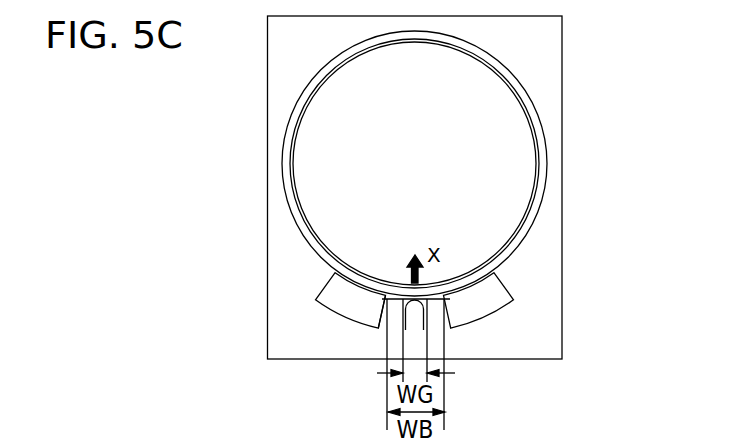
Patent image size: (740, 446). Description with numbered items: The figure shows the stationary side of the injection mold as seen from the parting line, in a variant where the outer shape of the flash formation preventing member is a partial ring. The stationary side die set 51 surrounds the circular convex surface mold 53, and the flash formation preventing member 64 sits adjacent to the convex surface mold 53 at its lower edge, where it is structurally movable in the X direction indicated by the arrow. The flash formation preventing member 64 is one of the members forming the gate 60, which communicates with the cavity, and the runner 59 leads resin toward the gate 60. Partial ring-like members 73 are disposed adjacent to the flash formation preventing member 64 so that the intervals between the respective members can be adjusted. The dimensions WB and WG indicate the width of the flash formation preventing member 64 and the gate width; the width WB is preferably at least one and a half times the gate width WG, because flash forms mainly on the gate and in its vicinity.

The stationary side die set 51 is at (553, 228).
The convex surface mold 53 is at (492, 112).
The runner 59 is at (420, 352).
The gate 60 is at (495, 295).
The flash formation preventing member 64 is at (393, 318).
The partial ring-like members 73 is at (343, 288).